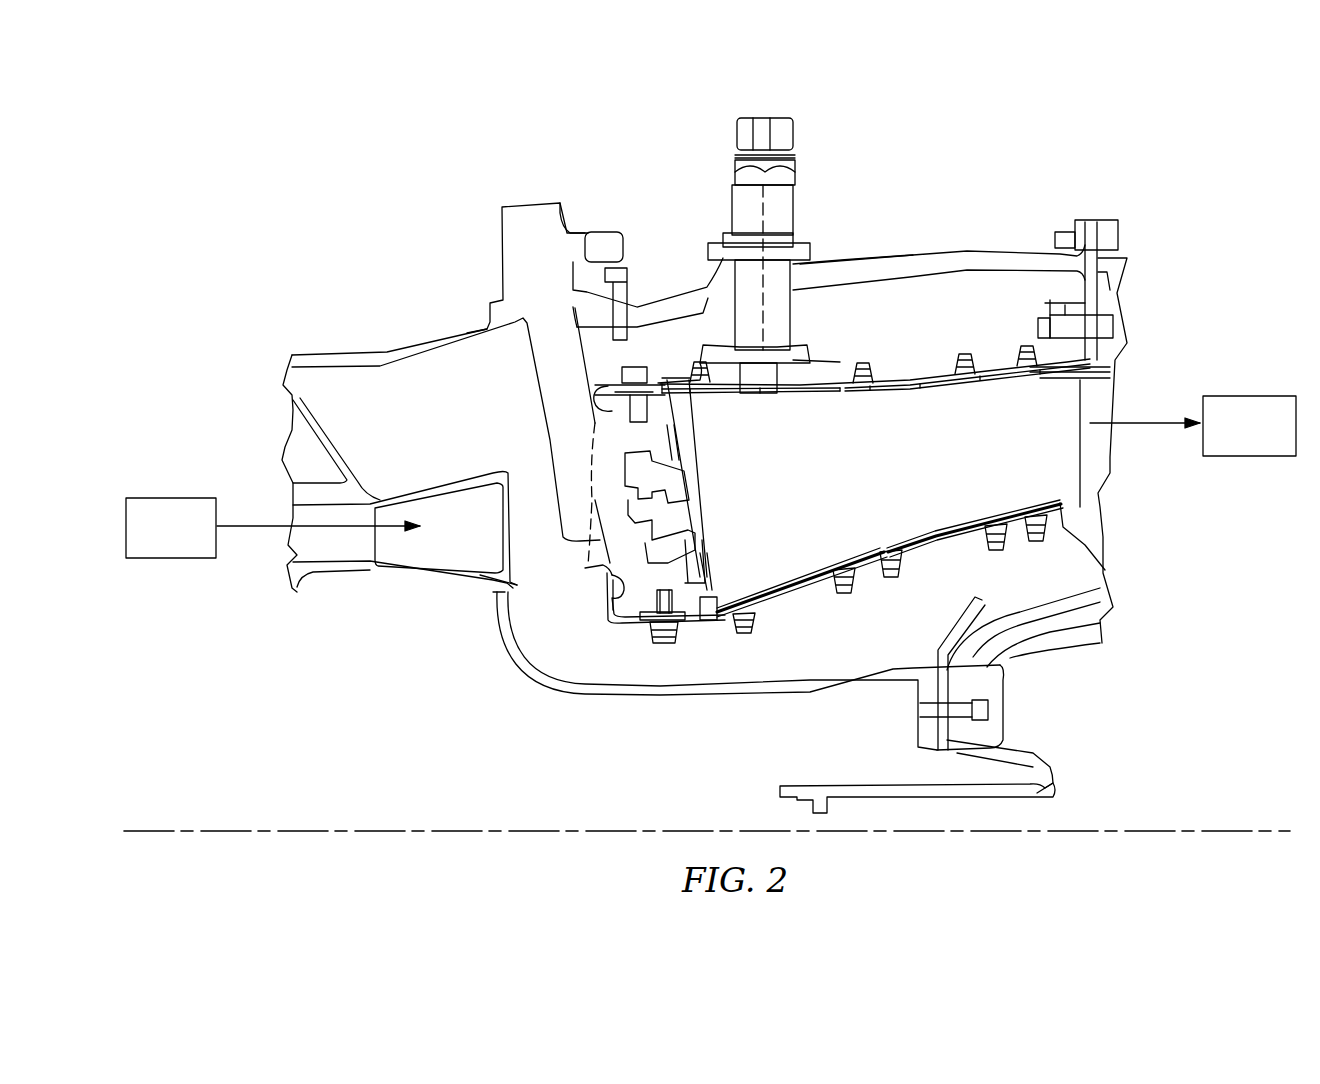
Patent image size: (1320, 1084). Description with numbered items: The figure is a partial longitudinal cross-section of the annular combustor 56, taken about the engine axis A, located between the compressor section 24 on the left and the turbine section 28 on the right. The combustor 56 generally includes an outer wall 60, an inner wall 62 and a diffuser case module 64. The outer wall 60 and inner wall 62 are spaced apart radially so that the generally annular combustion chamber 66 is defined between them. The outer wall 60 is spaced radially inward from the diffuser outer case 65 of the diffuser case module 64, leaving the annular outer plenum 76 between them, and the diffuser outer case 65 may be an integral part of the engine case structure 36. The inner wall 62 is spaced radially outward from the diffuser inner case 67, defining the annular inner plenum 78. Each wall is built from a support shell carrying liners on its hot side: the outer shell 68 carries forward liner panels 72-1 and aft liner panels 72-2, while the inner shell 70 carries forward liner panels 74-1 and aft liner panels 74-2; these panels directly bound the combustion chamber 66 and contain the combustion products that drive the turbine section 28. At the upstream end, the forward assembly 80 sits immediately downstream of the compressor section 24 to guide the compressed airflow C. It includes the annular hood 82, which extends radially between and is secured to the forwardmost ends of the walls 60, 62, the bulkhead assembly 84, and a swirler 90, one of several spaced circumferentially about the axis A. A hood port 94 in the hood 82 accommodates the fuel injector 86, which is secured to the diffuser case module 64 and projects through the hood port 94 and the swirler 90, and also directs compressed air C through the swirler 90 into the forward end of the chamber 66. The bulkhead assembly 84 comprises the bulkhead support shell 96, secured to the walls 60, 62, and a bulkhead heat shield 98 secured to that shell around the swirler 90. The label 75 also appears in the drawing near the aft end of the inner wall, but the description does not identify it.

The compressor section 24 is at (158, 538).
The turbine section 28 is at (1236, 436).
The engine case structure 36 is at (420, 350).
The combustor 56 is at (1010, 165).
The outer wall 60 is at (922, 364).
The inner wall 62 is at (868, 580).
The diffuser case module 64 is at (908, 254).
The diffuser outer case 65 is at (462, 332).
The combustion chamber 66 is at (882, 482).
The diffuser inner case 67 is at (778, 705).
The outer support shell 68 is at (887, 380).
The inner support shell 70 is at (950, 540).
The forward liner panels 72-1 is at (790, 397).
The aft liner panels 72-2 is at (950, 392).
The forward liner panels 74-1 is at (790, 570).
The aft liner panels 74-2 is at (965, 520).
The aft liner flange 75 is at (1043, 540).
The annular outer plenum 76 is at (859, 319).
The annular inner plenum 78 is at (836, 670).
The forward assembly 80 is at (608, 632).
The annular hood 82 is at (620, 595).
The bulkhead assembly 84 is at (690, 440).
The fuel injector 86 is at (562, 325).
The swirler 90 is at (695, 540).
The hood port 94 is at (610, 572).
The bulkhead support shell 96 is at (627, 613).
The bulkhead heat shield 98 is at (705, 575).
The engine axis A is at (1155, 829).
The compressed airflow C is at (253, 530).